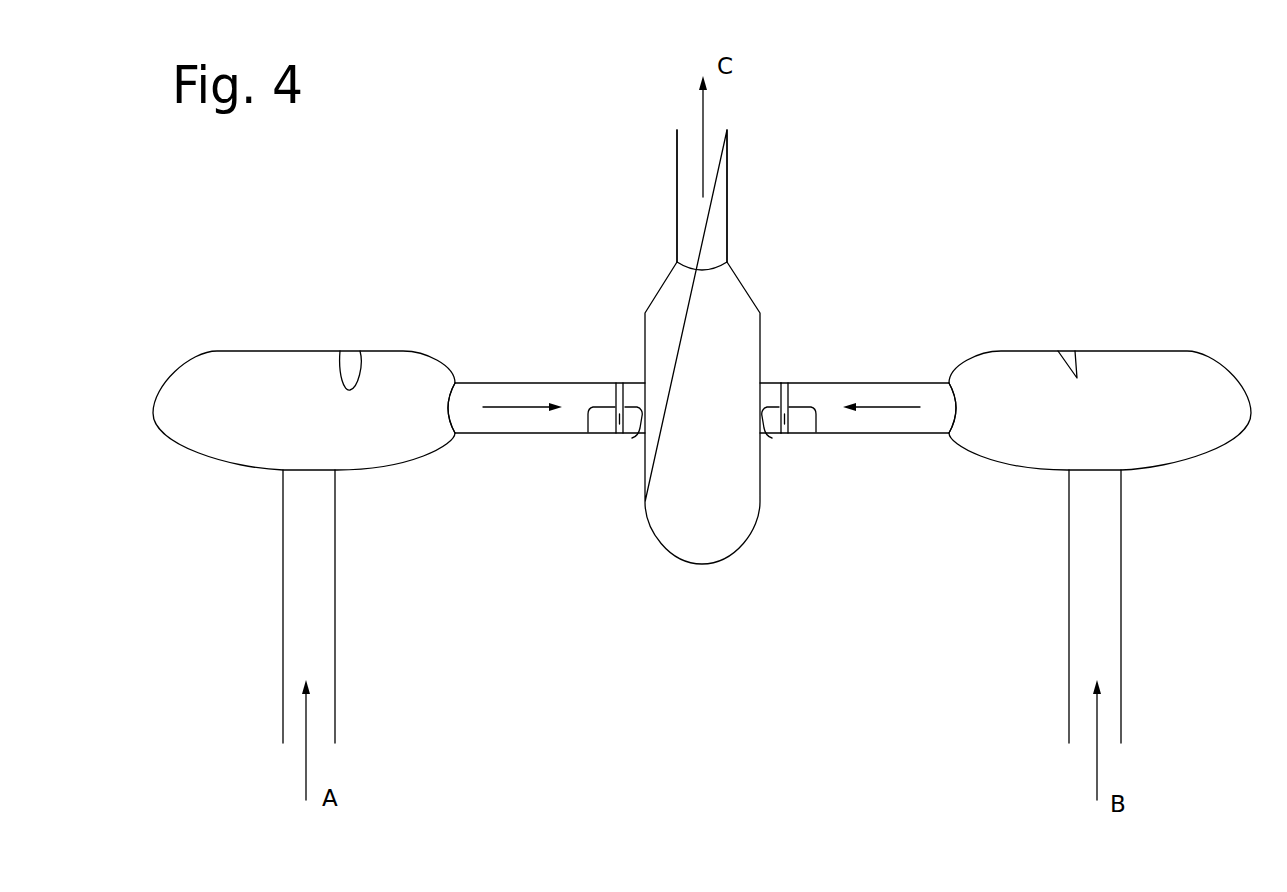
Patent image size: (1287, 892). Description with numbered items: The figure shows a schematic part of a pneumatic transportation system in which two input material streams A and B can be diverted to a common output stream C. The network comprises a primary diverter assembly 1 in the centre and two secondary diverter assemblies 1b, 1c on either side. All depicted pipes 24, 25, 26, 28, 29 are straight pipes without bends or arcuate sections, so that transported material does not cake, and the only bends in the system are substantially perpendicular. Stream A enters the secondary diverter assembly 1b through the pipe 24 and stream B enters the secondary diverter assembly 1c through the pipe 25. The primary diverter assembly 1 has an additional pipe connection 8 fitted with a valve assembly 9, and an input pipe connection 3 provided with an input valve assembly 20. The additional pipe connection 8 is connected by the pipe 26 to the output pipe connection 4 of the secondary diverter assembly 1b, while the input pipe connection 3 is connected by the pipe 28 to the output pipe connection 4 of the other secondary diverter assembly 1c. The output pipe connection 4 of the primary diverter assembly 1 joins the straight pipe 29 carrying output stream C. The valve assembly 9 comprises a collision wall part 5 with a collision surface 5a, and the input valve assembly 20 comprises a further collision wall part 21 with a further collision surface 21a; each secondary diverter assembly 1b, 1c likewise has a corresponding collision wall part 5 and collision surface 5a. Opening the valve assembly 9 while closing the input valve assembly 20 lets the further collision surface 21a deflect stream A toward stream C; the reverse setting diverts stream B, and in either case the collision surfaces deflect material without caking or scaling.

The primary diverter assembly 1 is at (694, 586).
The secondary diverter assembly 1b is at (287, 388).
The secondary diverter assembly 1c is at (1130, 380).
The input pipe connection 3 is at (781, 383).
The output pipe connection 4 is at (448, 400).
The collision wall part 5 is at (322, 351).
The collision surface 5a is at (360, 351).
The additional pipe connection 8 is at (618, 382).
The valve assembly 9 is at (618, 425).
The input valve assembly 20 is at (786, 425).
The further collision wall part 21 is at (816, 432).
The further collision surface 21a is at (772, 438).
The pipe 24 is at (313, 612).
The pipe 25 is at (1090, 625).
The pipe 26 is at (517, 382).
The pipe 28 is at (877, 382).
The pipe 29 is at (720, 190).